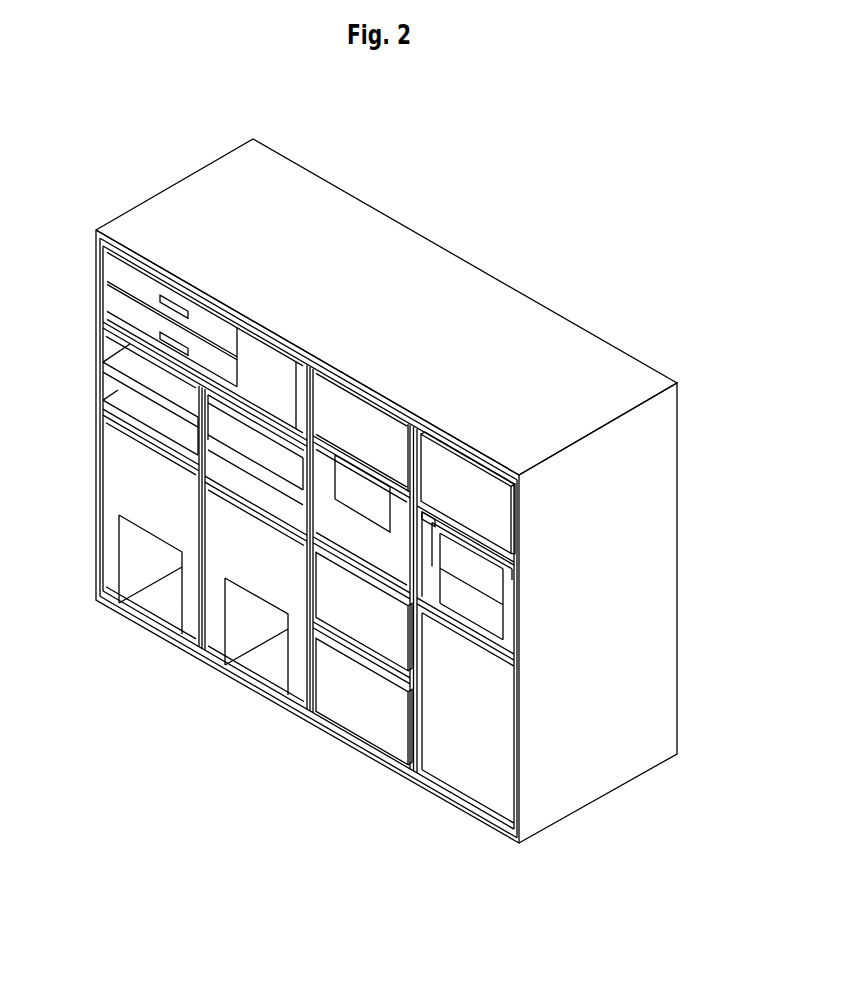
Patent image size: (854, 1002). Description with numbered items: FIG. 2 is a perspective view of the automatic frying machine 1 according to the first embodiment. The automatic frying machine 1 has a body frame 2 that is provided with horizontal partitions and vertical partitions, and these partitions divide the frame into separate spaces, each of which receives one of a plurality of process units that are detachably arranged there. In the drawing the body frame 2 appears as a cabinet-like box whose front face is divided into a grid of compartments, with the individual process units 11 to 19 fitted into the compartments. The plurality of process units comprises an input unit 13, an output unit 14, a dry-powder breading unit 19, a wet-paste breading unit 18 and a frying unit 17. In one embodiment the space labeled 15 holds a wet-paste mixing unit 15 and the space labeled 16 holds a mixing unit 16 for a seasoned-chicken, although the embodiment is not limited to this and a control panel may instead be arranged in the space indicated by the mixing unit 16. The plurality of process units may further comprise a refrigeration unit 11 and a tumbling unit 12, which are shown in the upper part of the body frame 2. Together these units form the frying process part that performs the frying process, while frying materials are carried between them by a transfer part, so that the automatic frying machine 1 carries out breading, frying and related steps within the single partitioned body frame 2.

The automatic frying machine 1 is at (662, 352).
The body frame 2 is at (665, 692).
The refrigeration unit 11 is at (121, 312).
The tumbling unit 12 is at (386, 438).
The input unit 13 is at (120, 386).
The output unit 14 is at (232, 440).
The wet-paste mixing unit 15 is at (182, 552).
The mixing unit for a seasoned-chicken 16 is at (503, 618).
The frying unit 17 is at (245, 634).
The wet-paste breading unit 18 is at (353, 700).
The dry-powder breading unit 19 is at (500, 787).